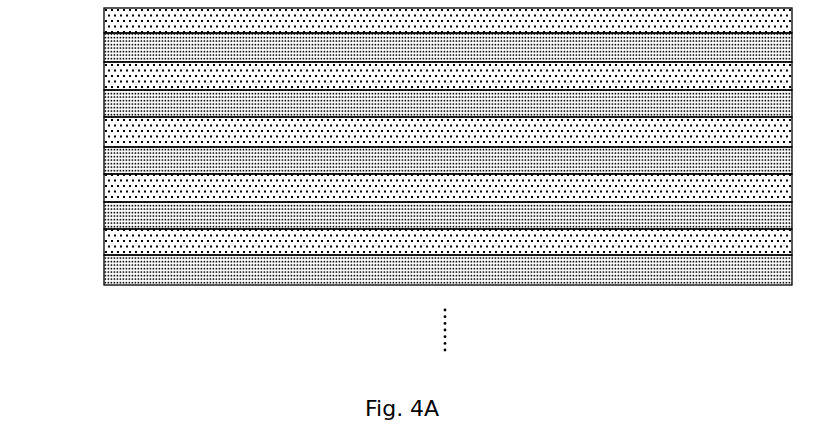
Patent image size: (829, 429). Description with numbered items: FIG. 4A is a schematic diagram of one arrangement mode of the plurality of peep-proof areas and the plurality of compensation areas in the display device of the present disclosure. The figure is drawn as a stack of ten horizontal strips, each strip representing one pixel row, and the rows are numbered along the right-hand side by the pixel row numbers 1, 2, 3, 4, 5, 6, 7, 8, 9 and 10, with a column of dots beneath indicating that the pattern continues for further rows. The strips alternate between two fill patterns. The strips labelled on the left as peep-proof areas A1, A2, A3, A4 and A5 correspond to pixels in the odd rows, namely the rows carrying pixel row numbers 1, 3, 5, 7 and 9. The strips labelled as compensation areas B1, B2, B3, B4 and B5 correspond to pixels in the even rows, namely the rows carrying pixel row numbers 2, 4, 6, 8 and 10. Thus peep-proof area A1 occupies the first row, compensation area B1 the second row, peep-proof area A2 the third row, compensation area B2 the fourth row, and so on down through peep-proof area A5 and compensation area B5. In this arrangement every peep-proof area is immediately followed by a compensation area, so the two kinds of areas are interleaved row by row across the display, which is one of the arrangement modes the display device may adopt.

The pixel row number 1 is at (448, 20).
The pixel row number 2 is at (448, 47).
The pixel row number 3 is at (448, 76).
The pixel row number 4 is at (448, 103).
The pixel row number 5 is at (448, 132).
The pixel row number 6 is at (448, 160).
The pixel row number 7 is at (448, 188).
The pixel row number 8 is at (448, 215).
The pixel row number 9 is at (448, 242).
The pixel row number 10 is at (448, 270).
The peep-proof area A1 is at (410, 20).
The compensation area B1 is at (410, 47).
The peep-proof area A2 is at (410, 76).
The compensation area B2 is at (410, 103).
The peep-proof area A3 is at (410, 132).
The compensation area B3 is at (410, 160).
The peep-proof area A4 is at (410, 188).
The compensation area B4 is at (410, 215).
The peep-proof area A5 is at (410, 242).
The compensation area B5 is at (410, 270).